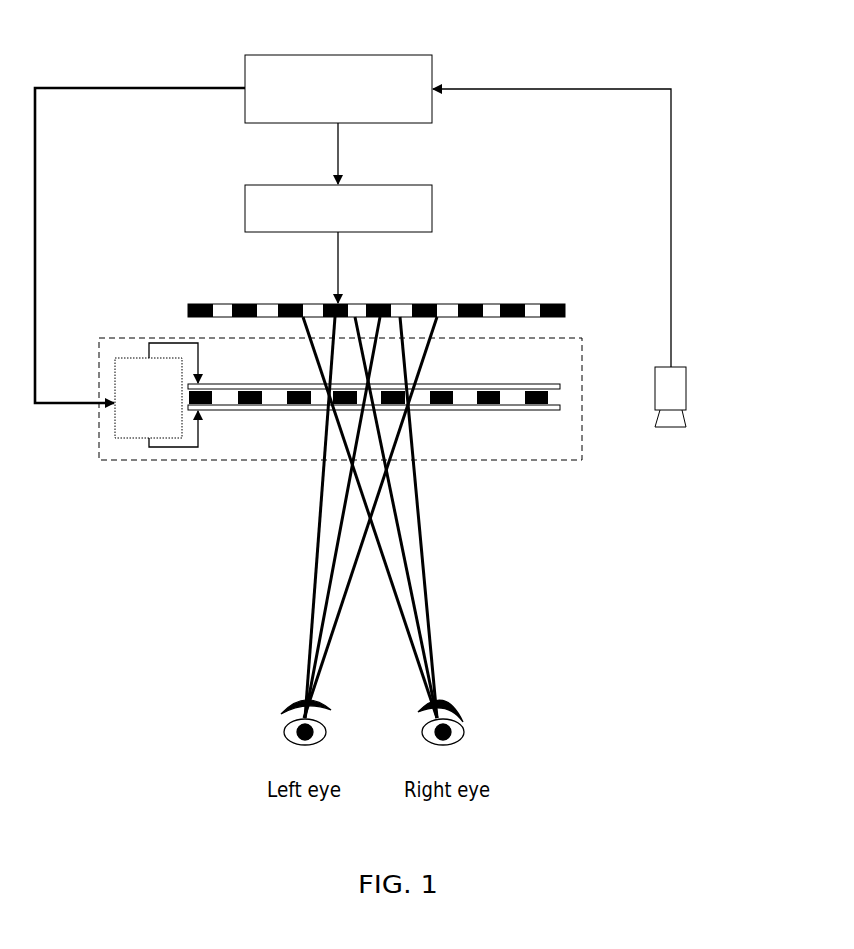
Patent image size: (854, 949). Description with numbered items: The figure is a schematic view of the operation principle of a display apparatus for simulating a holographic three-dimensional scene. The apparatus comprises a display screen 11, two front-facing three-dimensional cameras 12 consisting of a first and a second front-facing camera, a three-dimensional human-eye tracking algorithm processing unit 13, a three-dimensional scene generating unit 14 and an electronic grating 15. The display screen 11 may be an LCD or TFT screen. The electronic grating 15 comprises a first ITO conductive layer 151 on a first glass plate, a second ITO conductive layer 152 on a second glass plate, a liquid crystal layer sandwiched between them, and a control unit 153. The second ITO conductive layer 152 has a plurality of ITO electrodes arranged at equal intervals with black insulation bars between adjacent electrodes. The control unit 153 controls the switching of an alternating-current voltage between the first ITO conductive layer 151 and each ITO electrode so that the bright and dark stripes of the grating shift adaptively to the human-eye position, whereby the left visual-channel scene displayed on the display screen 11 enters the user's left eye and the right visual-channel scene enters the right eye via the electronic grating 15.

The display screen 11 is at (205, 304).
The two front-facing 3D cameras 12 is at (686, 388).
The 3D human-eye tracking algorithm processing unit 13 is at (395, 55).
The 3D scene generating unit 14 is at (432, 215).
The electronic grating 15 is at (107, 463).
The first ITO conductive layer 151 is at (495, 384).
The second ITO conductive layer 152 is at (490, 410).
The control unit 153 is at (113, 418).